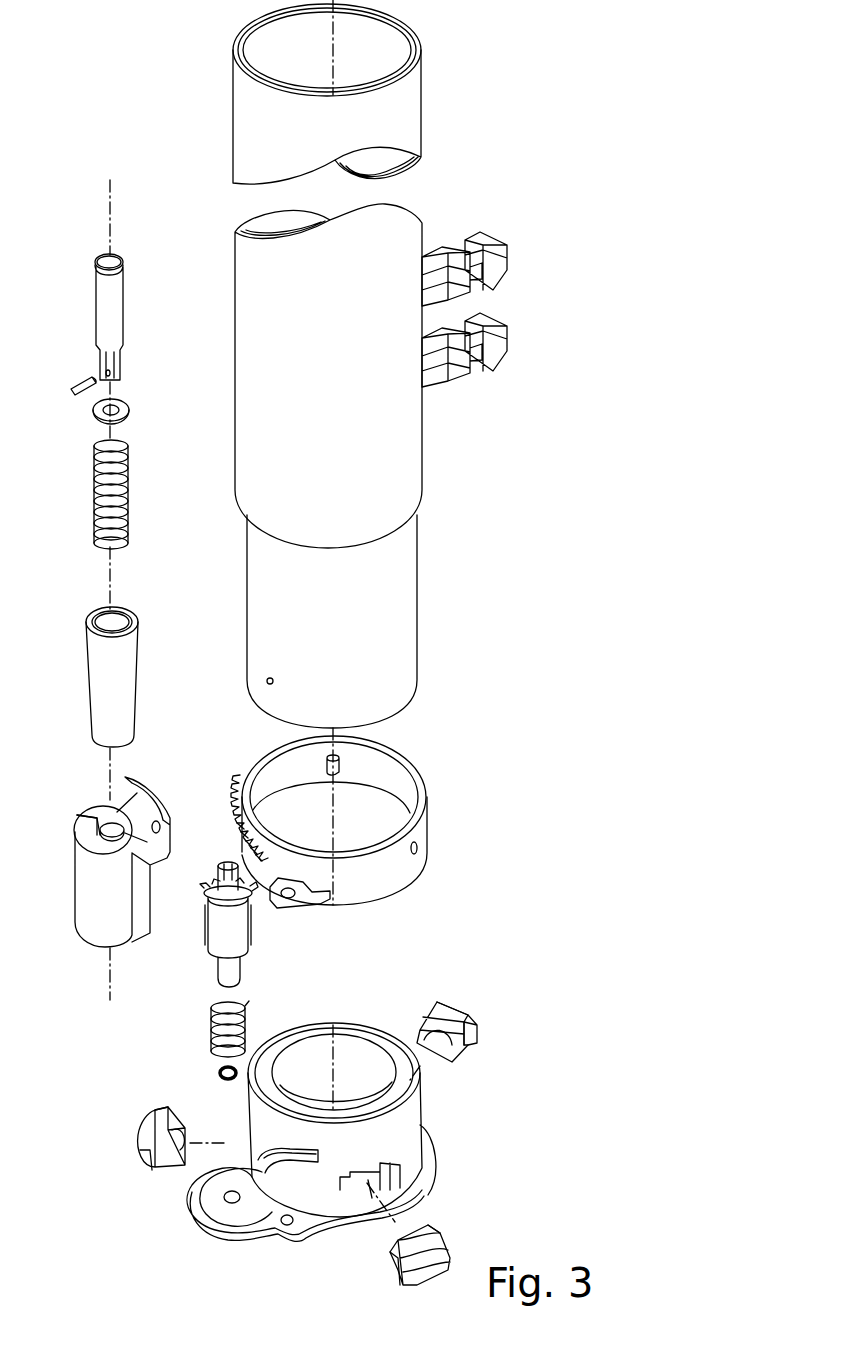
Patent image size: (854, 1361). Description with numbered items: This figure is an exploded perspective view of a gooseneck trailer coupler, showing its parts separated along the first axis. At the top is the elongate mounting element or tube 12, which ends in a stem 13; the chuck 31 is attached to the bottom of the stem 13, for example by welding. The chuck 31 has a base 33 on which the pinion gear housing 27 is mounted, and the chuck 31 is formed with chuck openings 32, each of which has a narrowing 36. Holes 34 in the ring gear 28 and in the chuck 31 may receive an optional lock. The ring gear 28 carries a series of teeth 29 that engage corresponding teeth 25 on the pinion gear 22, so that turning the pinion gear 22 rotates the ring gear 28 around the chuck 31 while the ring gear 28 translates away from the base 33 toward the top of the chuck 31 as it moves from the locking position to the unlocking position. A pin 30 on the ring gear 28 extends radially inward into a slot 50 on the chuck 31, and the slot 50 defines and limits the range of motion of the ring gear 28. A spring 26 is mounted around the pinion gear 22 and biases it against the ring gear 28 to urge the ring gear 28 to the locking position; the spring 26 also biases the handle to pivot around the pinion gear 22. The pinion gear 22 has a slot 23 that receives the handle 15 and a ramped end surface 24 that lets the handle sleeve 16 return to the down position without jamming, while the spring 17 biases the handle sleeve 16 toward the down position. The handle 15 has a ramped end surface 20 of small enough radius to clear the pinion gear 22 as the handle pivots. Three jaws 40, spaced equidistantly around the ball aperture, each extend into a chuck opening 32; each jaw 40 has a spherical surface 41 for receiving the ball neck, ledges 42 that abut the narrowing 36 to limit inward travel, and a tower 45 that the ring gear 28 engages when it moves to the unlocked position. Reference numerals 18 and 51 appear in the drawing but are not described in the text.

The mounting tube 12 is at (412, 460).
The stem 13 is at (408, 637).
The handle 15 is at (121, 294).
The handle sleeve 16 is at (90, 685).
The spring 17 is at (96, 462).
The pin head 18 is at (118, 256).
The ramped end surface 20 is at (97, 374).
The pinion gear 22 is at (216, 940).
The slot 23 is at (244, 889).
The ramped end surface 24 is at (228, 867).
The teeth 25 is at (208, 886).
The spring 26 is at (212, 1040).
The pinion gear housing 27 is at (84, 903).
The ring gear 28 is at (386, 876).
The teeth 29 is at (238, 788).
The pin 30 is at (340, 763).
The chuck 31 is at (425, 1153).
The chuck opening 32 is at (363, 1205).
The base 33 is at (200, 1215).
The hole 34 is at (289, 1228).
The narrowing 36 is at (395, 1195).
The jaw 40 is at (455, 1000).
The spherical surface 41 is at (440, 1048).
The ledge 42 is at (476, 1055).
The tower 45 is at (440, 1003).
The slot 50 is at (290, 1163).
The bracket 51 is at (80, 828).